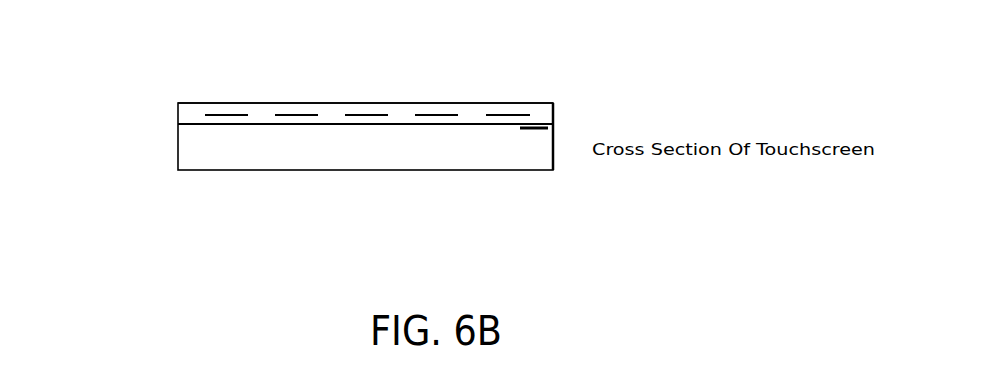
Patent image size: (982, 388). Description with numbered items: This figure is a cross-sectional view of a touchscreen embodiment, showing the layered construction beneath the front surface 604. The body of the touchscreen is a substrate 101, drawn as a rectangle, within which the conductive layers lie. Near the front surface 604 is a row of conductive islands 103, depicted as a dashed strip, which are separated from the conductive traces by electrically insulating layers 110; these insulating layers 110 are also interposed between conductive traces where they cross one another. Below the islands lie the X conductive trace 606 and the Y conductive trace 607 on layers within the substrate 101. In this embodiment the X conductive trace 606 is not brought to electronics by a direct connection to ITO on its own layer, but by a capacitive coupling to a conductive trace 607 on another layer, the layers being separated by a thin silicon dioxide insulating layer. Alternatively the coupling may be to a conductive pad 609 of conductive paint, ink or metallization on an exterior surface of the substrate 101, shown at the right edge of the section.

The substrate 101 is at (265, 155).
The conductive islands 103 is at (218, 122).
The electrically insulating layers 110 is at (192, 116).
The front surface 604 is at (322, 99).
The X conductive trace 606 is at (197, 119).
The Y conductive trace 607 is at (347, 130).
The conductive pad 609 is at (556, 121).